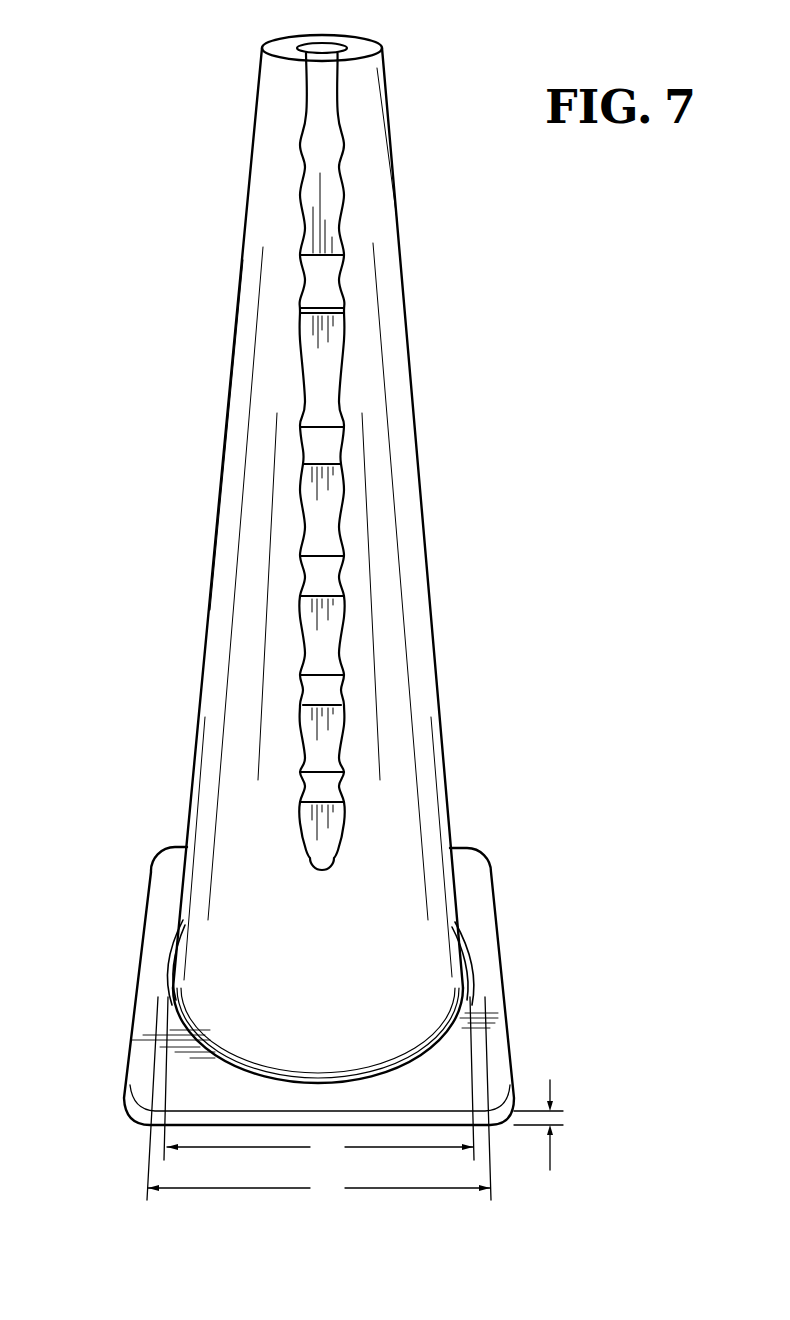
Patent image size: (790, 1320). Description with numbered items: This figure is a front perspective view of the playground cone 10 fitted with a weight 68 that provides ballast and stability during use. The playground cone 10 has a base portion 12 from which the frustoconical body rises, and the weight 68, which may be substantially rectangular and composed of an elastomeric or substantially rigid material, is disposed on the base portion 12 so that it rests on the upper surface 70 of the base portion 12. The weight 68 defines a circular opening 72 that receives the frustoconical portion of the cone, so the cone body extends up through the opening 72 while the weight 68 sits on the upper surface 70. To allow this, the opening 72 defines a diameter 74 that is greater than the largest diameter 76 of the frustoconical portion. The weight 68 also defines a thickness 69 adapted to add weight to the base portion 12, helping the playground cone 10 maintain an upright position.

The playground cone 10 is at (216, 395).
The base portion 12 is at (253, 560).
The weight 68 is at (167, 885).
The thickness 69 is at (553, 1080).
The upper surface 70 is at (168, 987).
The circular opening 72 is at (460, 940).
The diameter 74 is at (319, 1099).
The largest diameter 76 is at (319, 1078).